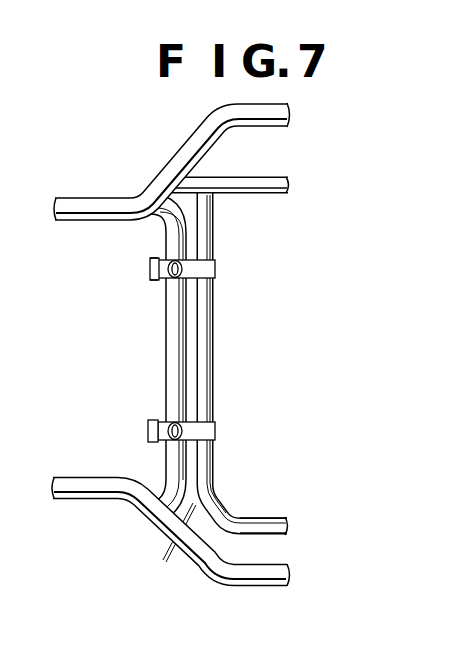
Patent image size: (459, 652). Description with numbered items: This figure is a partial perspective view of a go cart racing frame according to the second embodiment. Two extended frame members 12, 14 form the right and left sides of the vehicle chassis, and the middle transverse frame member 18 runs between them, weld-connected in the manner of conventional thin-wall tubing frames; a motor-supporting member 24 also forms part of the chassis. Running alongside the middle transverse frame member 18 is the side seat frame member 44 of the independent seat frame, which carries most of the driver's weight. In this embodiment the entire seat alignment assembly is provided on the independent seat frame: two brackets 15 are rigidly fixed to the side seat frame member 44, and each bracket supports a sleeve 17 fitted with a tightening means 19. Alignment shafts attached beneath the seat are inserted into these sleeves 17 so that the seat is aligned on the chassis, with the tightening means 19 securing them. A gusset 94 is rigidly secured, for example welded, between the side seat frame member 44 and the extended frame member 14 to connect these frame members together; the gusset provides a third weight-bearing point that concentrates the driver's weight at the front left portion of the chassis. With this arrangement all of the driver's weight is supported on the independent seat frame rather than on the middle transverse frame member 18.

The extended frame member 12 is at (173, 547).
The extended frame member 14 is at (290, 111).
The brackets 15 is at (195, 261).
The sleeves 17 is at (163, 279).
The middle transverse frame member 18 is at (167, 349).
The tightening means 19 is at (166, 257).
The motor-supporting member 24 is at (290, 178).
The side seat frame member 44 is at (204, 392).
The gusset 94 is at (214, 520).